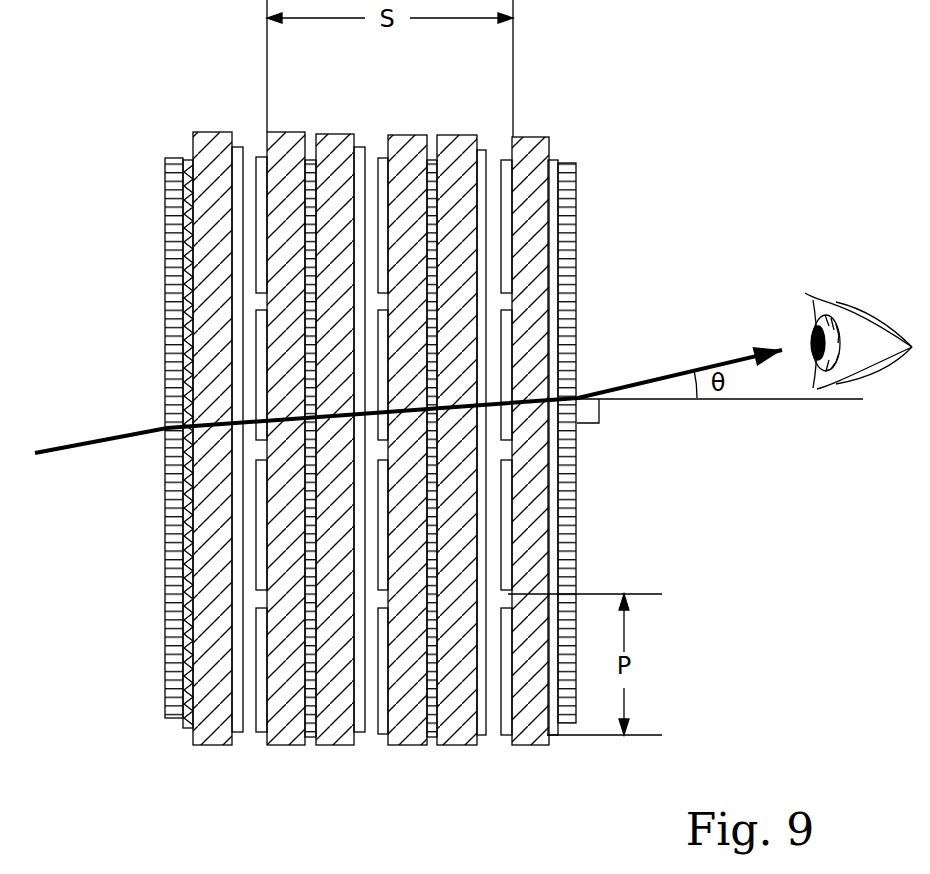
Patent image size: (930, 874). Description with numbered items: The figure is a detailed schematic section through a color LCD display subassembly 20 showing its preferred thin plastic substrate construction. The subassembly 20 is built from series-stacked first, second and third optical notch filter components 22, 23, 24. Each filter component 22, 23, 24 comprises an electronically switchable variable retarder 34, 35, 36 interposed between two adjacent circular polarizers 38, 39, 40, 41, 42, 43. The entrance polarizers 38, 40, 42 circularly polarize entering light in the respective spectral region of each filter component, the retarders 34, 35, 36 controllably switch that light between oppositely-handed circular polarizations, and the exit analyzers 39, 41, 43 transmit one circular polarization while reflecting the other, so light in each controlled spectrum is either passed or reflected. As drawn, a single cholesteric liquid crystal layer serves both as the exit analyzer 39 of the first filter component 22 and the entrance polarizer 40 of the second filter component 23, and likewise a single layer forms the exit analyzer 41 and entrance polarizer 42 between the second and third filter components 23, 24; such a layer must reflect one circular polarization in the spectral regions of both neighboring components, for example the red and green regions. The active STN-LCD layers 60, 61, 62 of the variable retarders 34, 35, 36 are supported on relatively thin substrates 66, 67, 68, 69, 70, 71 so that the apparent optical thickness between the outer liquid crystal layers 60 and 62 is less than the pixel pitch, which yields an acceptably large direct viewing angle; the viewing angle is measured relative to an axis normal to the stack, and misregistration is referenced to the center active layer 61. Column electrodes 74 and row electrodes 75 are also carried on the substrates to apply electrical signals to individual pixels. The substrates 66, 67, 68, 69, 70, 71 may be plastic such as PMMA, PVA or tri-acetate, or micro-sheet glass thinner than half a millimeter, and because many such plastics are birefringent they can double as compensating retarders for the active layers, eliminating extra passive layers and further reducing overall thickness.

The subassembly 20 is at (112, 712).
The first optical notch filter component 22 is at (307, 822).
The second optical notch filter component 23 is at (428, 822).
The third optical notch filter component 24 is at (572, 822).
The electronically switchable variable retarder 34 is at (307, 745).
The electronically switchable variable retarder 35 is at (428, 745).
The electronically switchable variable retarder 36 is at (431, 745).
The entrance polarizer 38 is at (172, 718).
The exit analyzer 39 is at (307, 742).
The entrance polarizer 40 is at (305, 486).
The exit analyzer 41 is at (430, 742).
The entrance polarizer 42 is at (430, 486).
The exit analyzer 43 is at (558, 723).
The active STN-LCD layer 60 is at (250, 158).
The active STN-LCD layer 61 is at (372, 160).
The active STN-LCD layer 62 is at (495, 163).
The thin substrate 66 is at (220, 132).
The thin substrate 67 is at (286, 132).
The thin substrate 68 is at (340, 134).
The thin substrate 69 is at (415, 135).
The thin substrate 70 is at (462, 135).
The thin substrate 71 is at (530, 137).
The column electrodes 74 is at (237, 185).
The row electrodes 75 is at (258, 242).